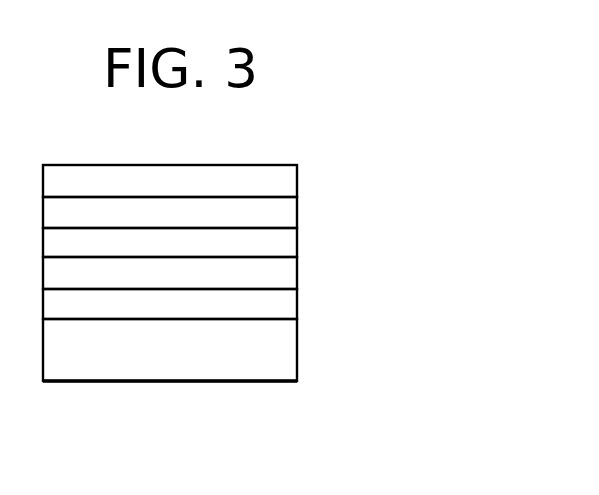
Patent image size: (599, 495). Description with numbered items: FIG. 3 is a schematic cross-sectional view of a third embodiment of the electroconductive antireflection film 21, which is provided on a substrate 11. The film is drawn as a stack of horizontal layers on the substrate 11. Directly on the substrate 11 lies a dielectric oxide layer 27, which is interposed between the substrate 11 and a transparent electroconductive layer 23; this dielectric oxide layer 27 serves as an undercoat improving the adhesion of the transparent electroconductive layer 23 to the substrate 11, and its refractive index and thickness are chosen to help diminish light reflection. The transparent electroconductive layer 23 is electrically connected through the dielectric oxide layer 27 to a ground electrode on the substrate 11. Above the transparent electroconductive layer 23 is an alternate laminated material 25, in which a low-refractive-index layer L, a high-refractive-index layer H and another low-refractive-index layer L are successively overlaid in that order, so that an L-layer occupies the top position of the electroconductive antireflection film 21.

The electroconductive antireflection film 21 is at (288, 245).
The alternate laminated material 25 is at (247, 209).
The transparent electroconductive layer 23 is at (297, 275).
The dielectric oxide layer 27 is at (247, 312).
The substrate 11 is at (297, 348).
The low-refractive-index layer L is at (297, 180).
The high-refractive-index layer H is at (208, 215).